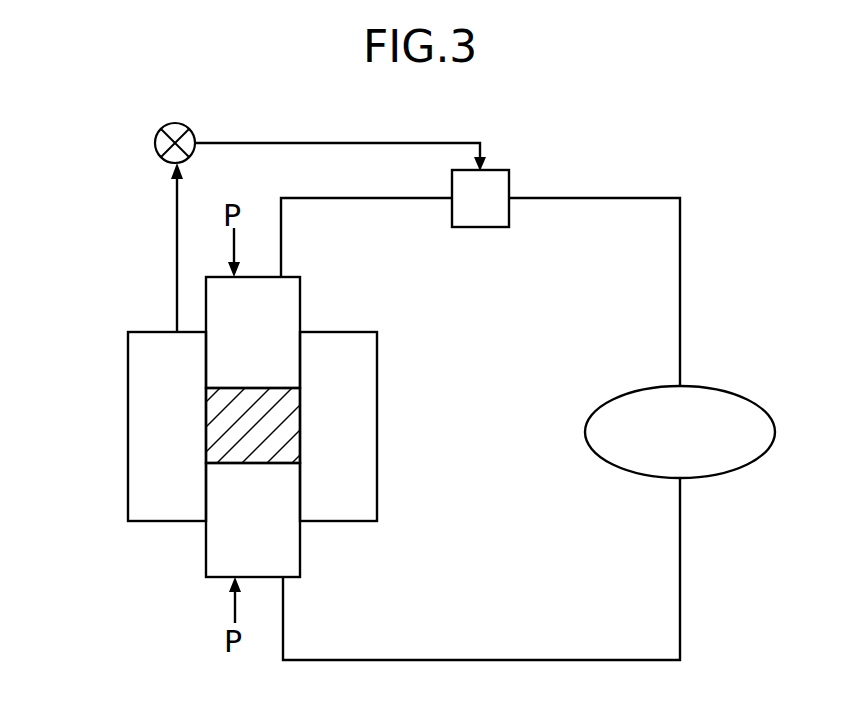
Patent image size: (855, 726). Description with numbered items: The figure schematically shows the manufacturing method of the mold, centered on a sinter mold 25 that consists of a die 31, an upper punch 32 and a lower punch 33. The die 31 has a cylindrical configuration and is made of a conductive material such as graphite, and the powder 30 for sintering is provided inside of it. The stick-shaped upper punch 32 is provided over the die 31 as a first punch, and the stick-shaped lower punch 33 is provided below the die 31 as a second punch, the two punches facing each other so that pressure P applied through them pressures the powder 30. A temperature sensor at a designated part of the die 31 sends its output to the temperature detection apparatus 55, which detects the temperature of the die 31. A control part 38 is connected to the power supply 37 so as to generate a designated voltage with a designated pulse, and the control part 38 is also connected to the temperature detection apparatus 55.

The sinter mold 25 is at (228, 393).
The powder for sintering 30 is at (300, 414).
The die 31 is at (128, 388).
The upper punch 32 is at (300, 300).
The lower punch 33 is at (206, 558).
The power supply 37 is at (722, 390).
The control part 38 is at (512, 170).
The temperature detection apparatus 55 is at (155, 143).